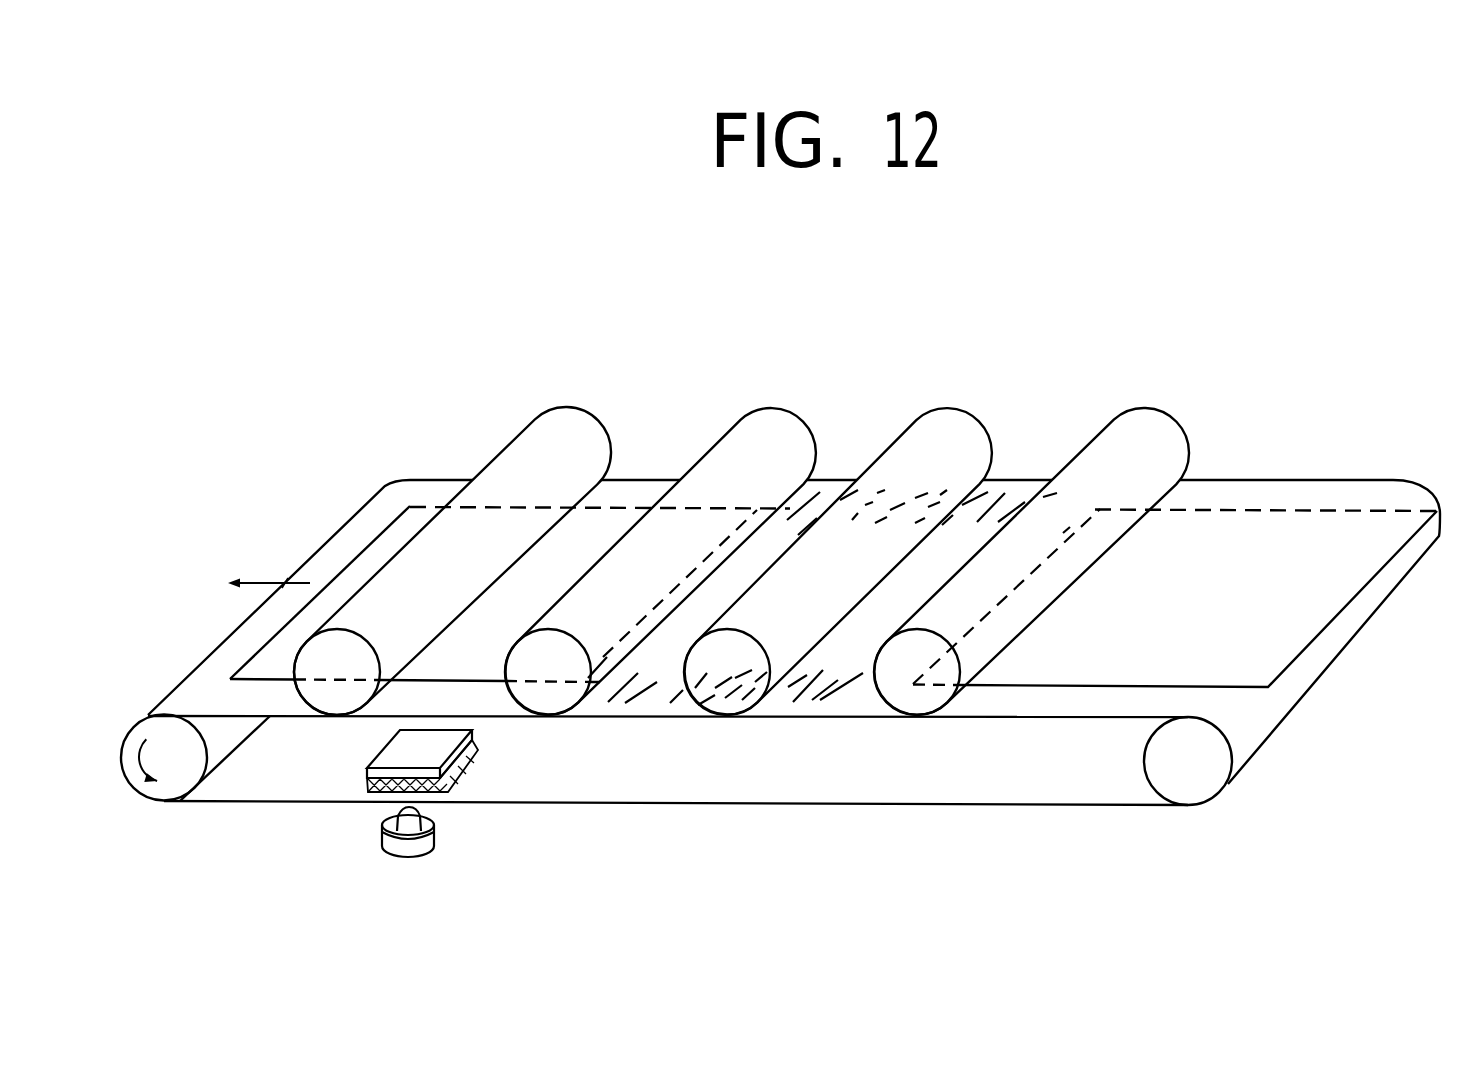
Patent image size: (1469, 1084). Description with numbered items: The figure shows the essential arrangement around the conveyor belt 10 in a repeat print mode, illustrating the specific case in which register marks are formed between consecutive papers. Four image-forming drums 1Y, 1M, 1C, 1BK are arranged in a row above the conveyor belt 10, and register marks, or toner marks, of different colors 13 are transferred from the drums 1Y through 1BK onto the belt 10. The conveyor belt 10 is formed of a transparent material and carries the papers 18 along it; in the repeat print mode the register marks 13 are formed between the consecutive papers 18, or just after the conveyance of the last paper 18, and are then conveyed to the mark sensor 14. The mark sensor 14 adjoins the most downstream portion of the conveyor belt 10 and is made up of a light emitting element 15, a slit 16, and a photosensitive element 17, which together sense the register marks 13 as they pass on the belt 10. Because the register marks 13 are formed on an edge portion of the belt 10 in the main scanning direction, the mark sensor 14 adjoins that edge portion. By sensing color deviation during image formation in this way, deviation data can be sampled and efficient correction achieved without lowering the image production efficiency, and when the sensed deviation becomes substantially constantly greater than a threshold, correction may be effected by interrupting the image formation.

The drum 1BK is at (550, 413).
The drum 1C is at (735, 428).
The drum 1M is at (963, 425).
The drum 1Y is at (1153, 422).
The conveyor belt 10 is at (635, 806).
The register marks 13 is at (831, 474).
The mark sensor 14 is at (348, 844).
The light emitting element 15 is at (416, 853).
The slit 16 is at (458, 776).
The photosensitive element 17 is at (376, 752).
The paper 18 is at (370, 550).